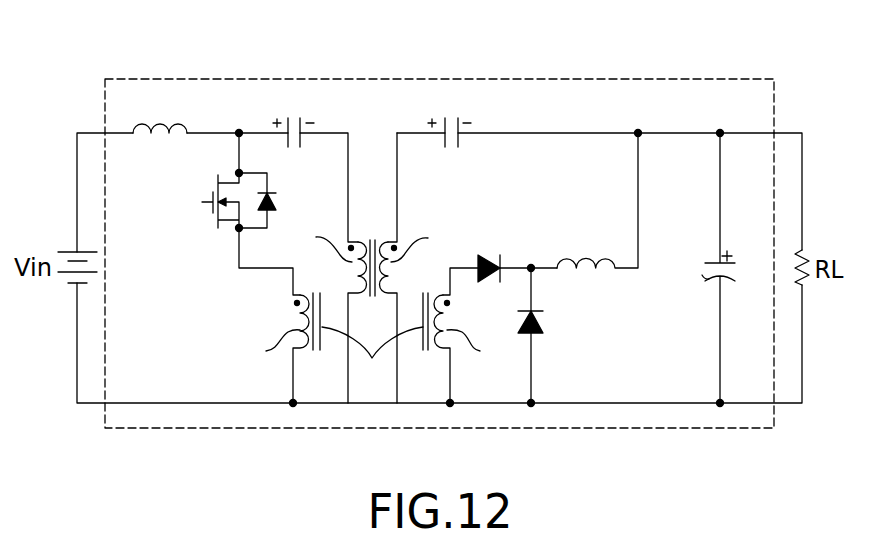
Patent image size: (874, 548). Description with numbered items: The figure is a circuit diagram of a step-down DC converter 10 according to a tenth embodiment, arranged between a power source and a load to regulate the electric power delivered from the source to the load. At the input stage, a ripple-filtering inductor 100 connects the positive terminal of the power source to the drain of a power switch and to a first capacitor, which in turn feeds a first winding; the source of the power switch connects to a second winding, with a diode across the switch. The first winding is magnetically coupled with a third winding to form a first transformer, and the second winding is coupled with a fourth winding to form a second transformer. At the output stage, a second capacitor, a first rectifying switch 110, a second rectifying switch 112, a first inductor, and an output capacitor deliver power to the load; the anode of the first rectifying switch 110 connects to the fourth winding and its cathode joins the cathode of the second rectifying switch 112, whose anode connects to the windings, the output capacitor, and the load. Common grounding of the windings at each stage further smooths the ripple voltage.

The step-down DC converter 10 is at (412, 85).
The ripple-filtering inductor 100 is at (157, 124).
The first rectifying switch 110 is at (492, 256).
The second rectifying switch 112 is at (545, 322).